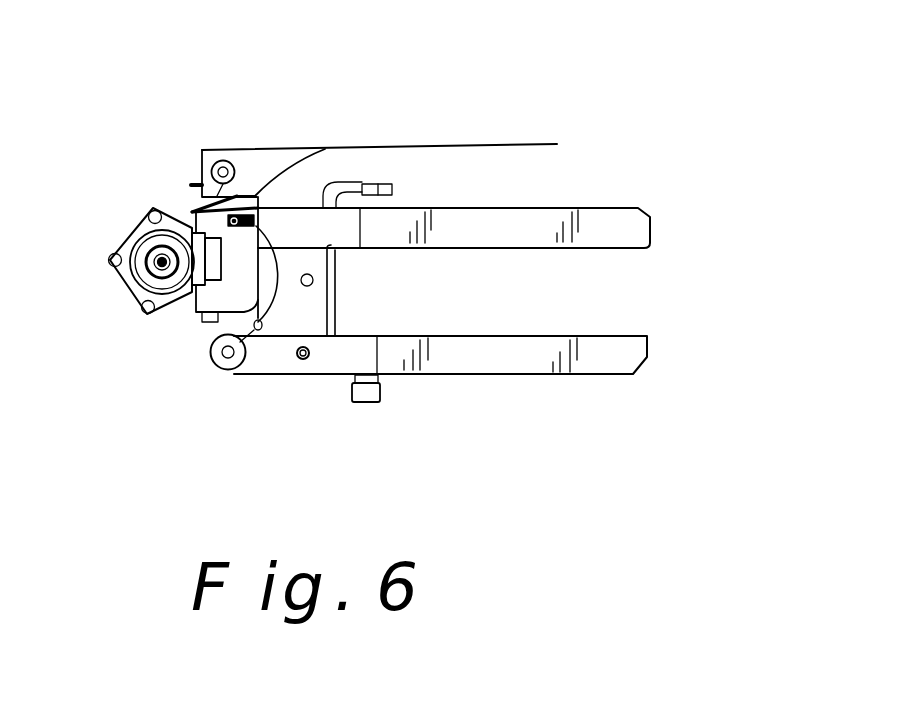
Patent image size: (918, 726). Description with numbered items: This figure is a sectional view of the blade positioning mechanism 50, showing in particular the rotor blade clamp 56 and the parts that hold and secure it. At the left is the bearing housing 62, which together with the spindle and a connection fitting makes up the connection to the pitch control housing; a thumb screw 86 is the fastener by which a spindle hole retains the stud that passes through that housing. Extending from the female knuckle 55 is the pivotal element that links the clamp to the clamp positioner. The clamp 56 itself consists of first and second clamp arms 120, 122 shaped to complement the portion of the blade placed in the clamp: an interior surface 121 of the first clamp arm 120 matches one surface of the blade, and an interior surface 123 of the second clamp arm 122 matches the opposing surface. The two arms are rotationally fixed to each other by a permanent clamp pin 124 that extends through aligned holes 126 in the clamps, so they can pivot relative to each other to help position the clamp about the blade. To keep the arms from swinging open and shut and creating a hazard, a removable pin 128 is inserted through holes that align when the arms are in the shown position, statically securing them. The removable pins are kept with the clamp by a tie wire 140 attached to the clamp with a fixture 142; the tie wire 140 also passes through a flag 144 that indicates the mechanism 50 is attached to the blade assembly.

The blade positioning mechanism 50 is at (118, 104).
The female knuckle 55 is at (393, 192).
The rotor blade clamp 56 is at (614, 207).
The bearing housing 62 is at (132, 227).
The thumb screw 86 is at (378, 402).
The first clamp arm 120 is at (649, 211).
The interior surface of the first clamp arm 121 is at (473, 247).
The second clamp arm 122 is at (650, 360).
The interior surface of the second clamp arm 123 is at (447, 336).
The permanent clamp pin 124 is at (305, 360).
The aligned holes 126 is at (300, 351).
The removable pin 128 is at (218, 361).
The tie wire 140 is at (242, 197).
The fixture 142 is at (250, 212).
The flag 144 is at (484, 146).